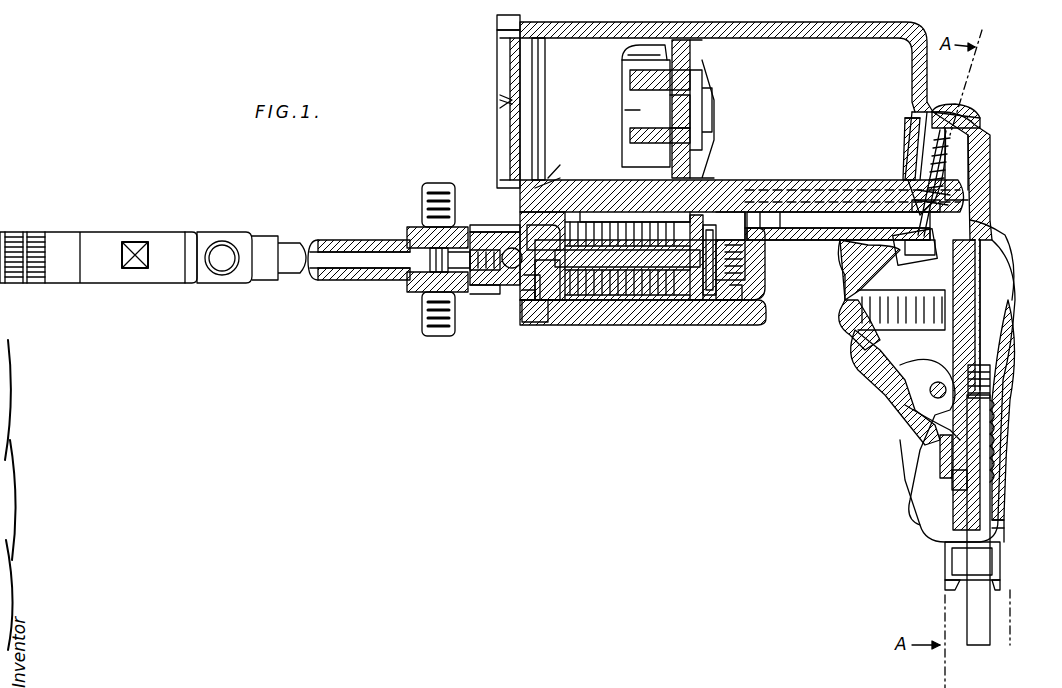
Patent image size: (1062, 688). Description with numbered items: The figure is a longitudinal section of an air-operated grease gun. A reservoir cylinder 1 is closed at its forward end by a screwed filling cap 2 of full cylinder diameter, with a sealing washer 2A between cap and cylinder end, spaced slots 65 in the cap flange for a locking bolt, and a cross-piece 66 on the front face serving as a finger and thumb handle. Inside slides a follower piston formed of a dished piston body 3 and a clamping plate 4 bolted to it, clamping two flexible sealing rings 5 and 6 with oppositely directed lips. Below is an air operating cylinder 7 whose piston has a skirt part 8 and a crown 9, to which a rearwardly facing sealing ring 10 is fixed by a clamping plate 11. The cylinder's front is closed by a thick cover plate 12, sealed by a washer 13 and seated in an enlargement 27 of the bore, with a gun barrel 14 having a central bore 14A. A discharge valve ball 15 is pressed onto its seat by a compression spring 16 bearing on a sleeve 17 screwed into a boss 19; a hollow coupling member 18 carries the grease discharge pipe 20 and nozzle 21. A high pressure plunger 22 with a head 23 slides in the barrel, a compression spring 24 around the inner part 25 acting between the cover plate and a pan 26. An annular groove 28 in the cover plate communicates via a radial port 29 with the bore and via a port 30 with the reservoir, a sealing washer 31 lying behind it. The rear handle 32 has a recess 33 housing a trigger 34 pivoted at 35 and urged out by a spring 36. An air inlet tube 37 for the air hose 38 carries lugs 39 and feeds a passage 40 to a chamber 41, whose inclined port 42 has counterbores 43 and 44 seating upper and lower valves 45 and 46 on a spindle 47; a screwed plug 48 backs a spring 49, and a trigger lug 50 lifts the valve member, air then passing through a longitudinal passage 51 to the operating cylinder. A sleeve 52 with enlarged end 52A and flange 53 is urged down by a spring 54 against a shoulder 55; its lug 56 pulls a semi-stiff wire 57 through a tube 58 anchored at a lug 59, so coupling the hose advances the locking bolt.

The reservoir cylinder 1 is at (905, 62).
The filling cap 2 is at (508, 78).
The sealing washer 2A is at (545, 35).
The piston body 3 is at (640, 80).
The clamping plate 4 is at (712, 82).
The flexible sealing ring 5 is at (650, 50).
The flexible sealing ring 6 is at (712, 168).
The air operating cylinder 7 is at (652, 300).
The skirt part 8 is at (698, 300).
The crown 9 is at (742, 290).
The flexible sealing ring 10 is at (735, 300).
The clamping plate 11 is at (745, 252).
The cover plate 12 is at (525, 298).
The sealing washer 13 is at (530, 322).
The gun barrel 14 is at (508, 285).
The central bore 14A is at (525, 235).
The ball 15 is at (492, 235).
The compression spring 16 is at (482, 288).
The sleeve 17 is at (420, 240).
The hollow coupling member 18 is at (425, 288).
The boss 19 is at (445, 252).
The grease discharge pipe 20 is at (326, 268).
The nozzle 21 is at (170, 275).
The high pressure plunger 22 is at (627, 256).
The head 23 is at (690, 230).
The compression spring 24 is at (636, 295).
The inner part 25 is at (630, 240).
The pan 26 is at (710, 296).
The enlargement 27 is at (548, 295).
The annular groove 28 is at (538, 300).
The radial port 29 is at (560, 168).
The port 30 is at (562, 180).
The flexible sealing washer 31 is at (580, 292).
The handle 32 is at (988, 330).
The recess 33 is at (852, 248).
The trigger 34 is at (858, 275).
The pivot 35 is at (888, 290).
The spring 36 is at (878, 348).
The air inlet tube 37 is at (996, 525).
The air hose 38 is at (1000, 625).
The external lugs 39 is at (1015, 582).
The passage 40 is at (975, 318).
The chamber 41 is at (975, 165).
The downwardly inclined port 42 is at (915, 220).
The counterbore 43 is at (955, 205).
The counterbore 44 is at (985, 222).
The upper valve 45 is at (960, 192).
The lower valve 46 is at (922, 258).
The valve spindle 47 is at (905, 212).
The hollow screwed plug 48 is at (975, 122).
The compression spring 49 is at (930, 155).
The lug 50 is at (918, 262).
The longitudinal passage 51 is at (785, 230).
The sleeve 52 is at (995, 538).
The enlarged lower end 52A is at (945, 560).
The flange 53 is at (978, 520).
The compression spring 54 is at (992, 372).
The shoulder 55 is at (995, 360).
The lug 56 is at (950, 480).
The semi-stiff wire 57 is at (920, 425).
The tube 58 is at (775, 185).
The lug 59 is at (900, 405).
The slots 65 is at (500, 26).
The cross-piece 66 is at (505, 116).